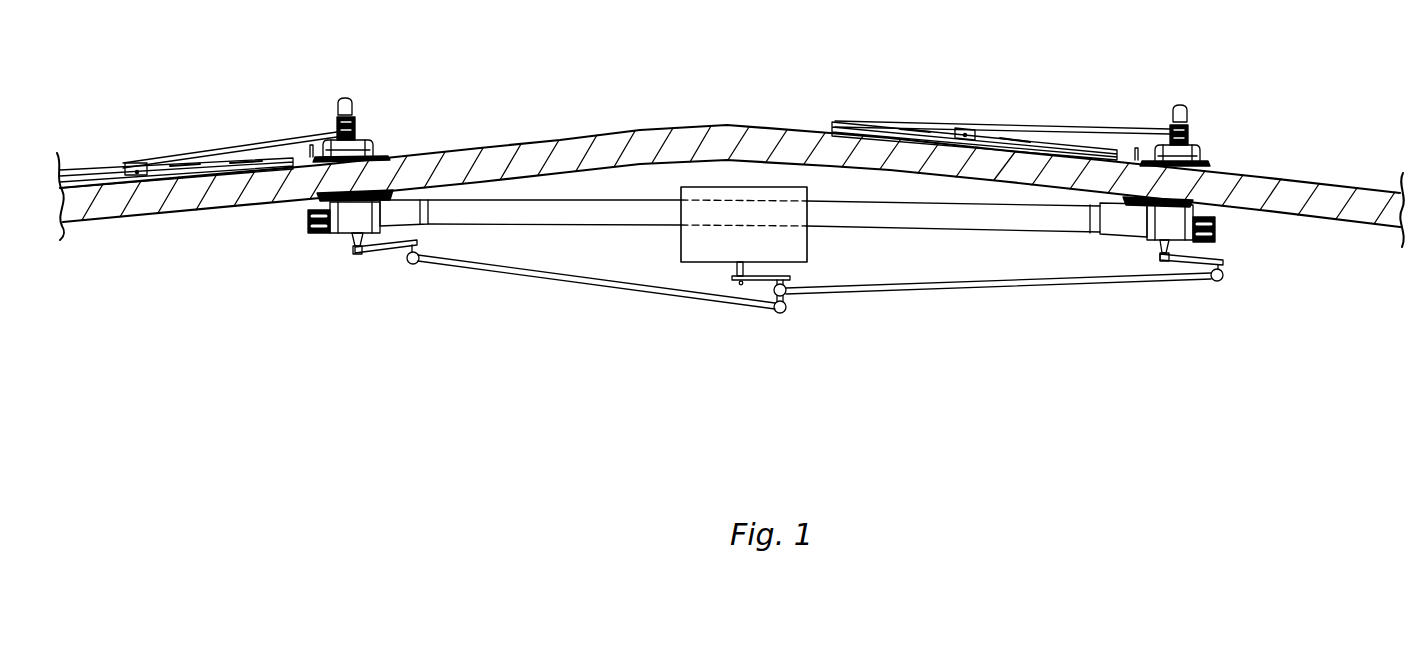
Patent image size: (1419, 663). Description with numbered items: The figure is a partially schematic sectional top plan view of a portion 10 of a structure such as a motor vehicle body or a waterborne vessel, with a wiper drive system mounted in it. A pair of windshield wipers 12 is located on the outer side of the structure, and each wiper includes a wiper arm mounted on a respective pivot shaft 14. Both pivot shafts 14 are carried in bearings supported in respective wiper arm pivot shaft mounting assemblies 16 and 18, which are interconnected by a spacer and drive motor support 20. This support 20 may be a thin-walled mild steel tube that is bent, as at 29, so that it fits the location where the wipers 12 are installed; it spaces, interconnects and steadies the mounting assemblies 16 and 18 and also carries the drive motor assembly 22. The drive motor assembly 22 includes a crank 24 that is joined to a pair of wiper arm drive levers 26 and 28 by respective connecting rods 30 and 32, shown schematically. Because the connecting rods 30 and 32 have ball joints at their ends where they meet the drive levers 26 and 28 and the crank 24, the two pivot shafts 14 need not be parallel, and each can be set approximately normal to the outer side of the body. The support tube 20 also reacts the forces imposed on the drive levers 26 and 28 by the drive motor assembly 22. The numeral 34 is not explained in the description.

The portion of a structure 10 is at (602, 135).
The windshield wipers 12 is at (167, 150).
The pivot shaft 14 is at (358, 257).
The wiper arm pivot shaft mounting assembly 16 is at (378, 134).
The wiper arm pivot shaft mounting assembly 18 is at (1224, 231).
The spacer and drive motor support 20 is at (1014, 232).
The drive motor assembly 22 is at (807, 245).
The crank 24 is at (760, 280).
The wiper arm drive lever 26 is at (393, 250).
The wiper arm drive lever 28 is at (1208, 248).
The bend 29 is at (427, 222).
The connecting rod 30 is at (587, 285).
The connecting rod 32 is at (983, 292).
The wiper pivot shaft 34 is at (352, 103).